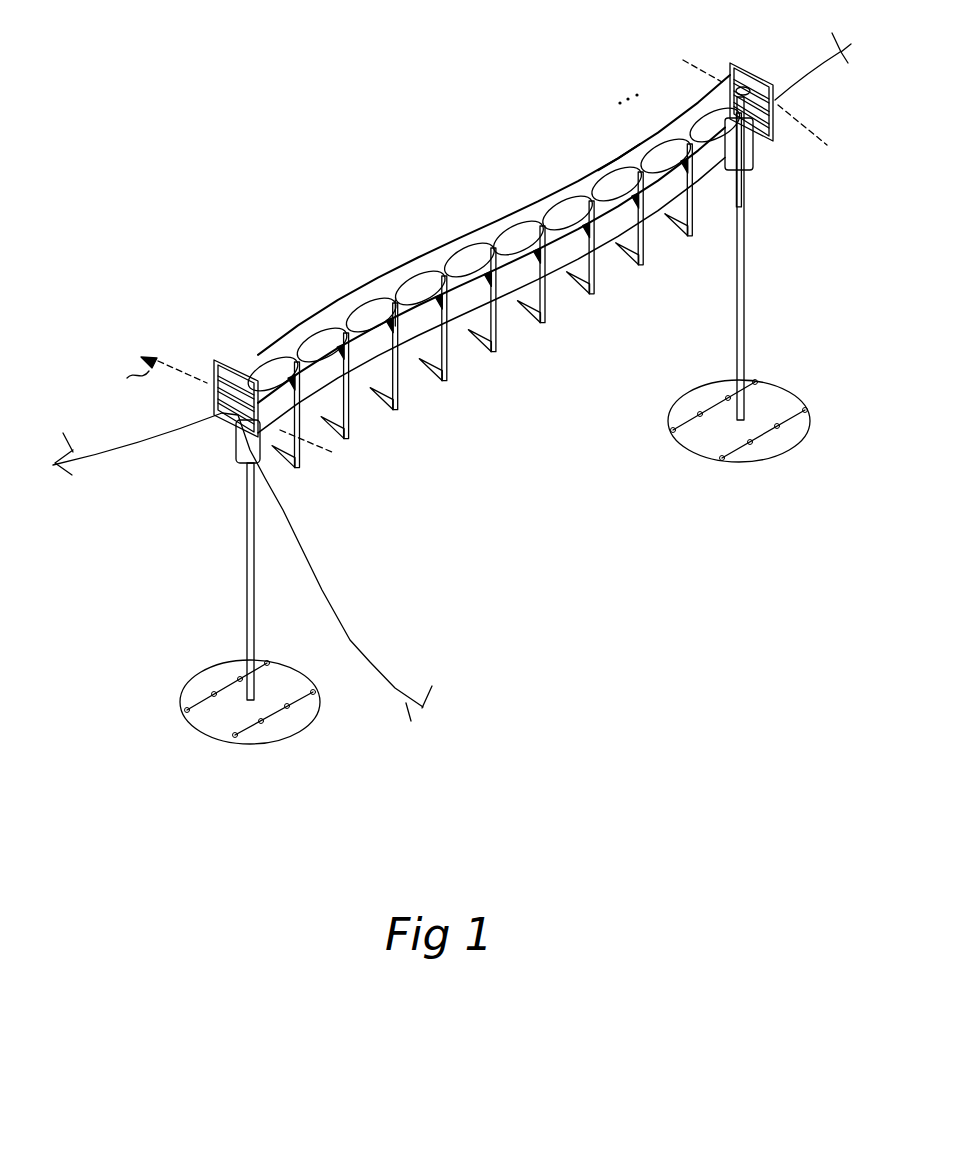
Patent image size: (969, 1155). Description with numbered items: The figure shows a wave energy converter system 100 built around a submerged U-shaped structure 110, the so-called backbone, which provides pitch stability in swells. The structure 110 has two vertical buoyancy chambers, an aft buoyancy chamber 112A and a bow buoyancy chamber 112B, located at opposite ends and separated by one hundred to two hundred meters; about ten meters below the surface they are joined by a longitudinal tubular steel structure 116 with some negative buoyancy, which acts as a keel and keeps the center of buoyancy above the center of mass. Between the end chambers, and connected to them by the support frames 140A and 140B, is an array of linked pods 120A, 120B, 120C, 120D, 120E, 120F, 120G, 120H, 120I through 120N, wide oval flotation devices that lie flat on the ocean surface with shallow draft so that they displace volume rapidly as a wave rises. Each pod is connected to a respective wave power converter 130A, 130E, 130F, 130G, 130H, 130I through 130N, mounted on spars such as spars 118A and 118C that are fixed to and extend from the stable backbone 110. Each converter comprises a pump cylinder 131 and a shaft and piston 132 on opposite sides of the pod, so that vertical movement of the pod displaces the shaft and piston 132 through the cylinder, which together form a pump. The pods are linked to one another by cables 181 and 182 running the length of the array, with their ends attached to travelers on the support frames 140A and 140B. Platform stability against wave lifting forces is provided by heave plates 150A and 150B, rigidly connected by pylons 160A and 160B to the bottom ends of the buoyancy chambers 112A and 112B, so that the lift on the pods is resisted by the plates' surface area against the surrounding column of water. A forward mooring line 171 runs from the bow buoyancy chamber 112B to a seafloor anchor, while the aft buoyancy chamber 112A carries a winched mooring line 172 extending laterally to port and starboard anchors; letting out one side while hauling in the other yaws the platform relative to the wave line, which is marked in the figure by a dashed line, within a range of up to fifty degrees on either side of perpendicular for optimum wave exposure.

The wave energy converter system 100 is at (468, 236).
The submerged U-shaped structure 110 is at (505, 318).
The aft buoyancy chamber 112A is at (232, 446).
The bow buoyancy chamber 112B is at (752, 139).
The longitudinal tubular steel structure 116 is at (616, 252).
The spar 118A is at (296, 456).
The spar 118C is at (375, 398).
The pod 120A is at (254, 360).
The pod 120B is at (307, 330).
The pod 120C is at (356, 302).
The pod 120D is at (402, 274).
The pod 120E is at (452, 247).
The pod 120F is at (498, 226).
The pod 120G is at (553, 202).
The pod 120H is at (601, 175).
The pod 120I is at (650, 146).
The pod 120N is at (699, 116).
The wave power converter 130A is at (304, 466).
The wave power converter 130E is at (497, 351).
The wave power converter 130F is at (546, 322).
The wave power converter 130G is at (596, 293).
The wave power converter 130H is at (643, 263).
The wave power converter 130I is at (698, 242).
The wave power converter 130N is at (747, 182).
The pump cylinder 131 is at (447, 357).
The shaft and piston 132 is at (394, 296).
The structural support 140A is at (213, 372).
The structural support 140B is at (729, 63).
The heave plate 150A is at (308, 705).
The heave plate 150B is at (790, 398).
The pylon 160A is at (244, 528).
The pylon 160B is at (745, 222).
The forward mooring line 171 is at (812, 73).
The mooring line 172 is at (103, 456).
The cable 181 is at (622, 168).
The cable 182 is at (690, 233).